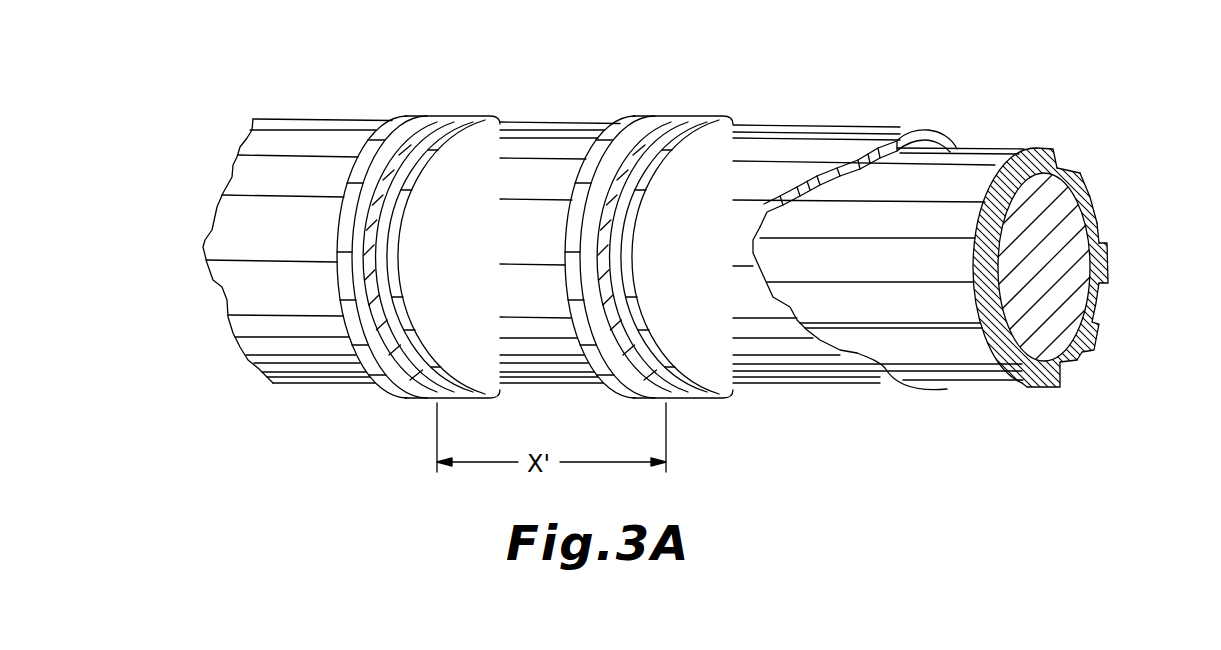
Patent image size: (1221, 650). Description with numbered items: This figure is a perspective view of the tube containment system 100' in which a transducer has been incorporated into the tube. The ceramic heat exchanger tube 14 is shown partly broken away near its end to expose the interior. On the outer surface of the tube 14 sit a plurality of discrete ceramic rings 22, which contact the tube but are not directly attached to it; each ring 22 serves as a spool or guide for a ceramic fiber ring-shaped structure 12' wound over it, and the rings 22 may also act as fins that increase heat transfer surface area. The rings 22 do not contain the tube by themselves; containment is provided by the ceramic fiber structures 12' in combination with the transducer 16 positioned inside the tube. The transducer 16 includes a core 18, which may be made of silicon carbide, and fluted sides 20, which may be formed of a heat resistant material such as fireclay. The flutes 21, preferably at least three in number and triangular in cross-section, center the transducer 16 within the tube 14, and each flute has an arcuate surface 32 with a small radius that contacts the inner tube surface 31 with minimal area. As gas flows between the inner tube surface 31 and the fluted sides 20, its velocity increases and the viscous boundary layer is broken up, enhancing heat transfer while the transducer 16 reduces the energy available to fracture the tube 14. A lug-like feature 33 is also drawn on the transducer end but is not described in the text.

The tube containment system 100' is at (558, 229).
The ceramic fiber ring-shaped structure 12' is at (547, 221).
The ceramic ring 22 is at (407, 114).
The tube 14 is at (836, 122).
The inner tube surface 31 is at (957, 140).
The transducer 16 is at (1078, 172).
The lug 33 is at (1097, 218).
The arcuate surface 32 is at (1108, 252).
The fluted sides 20 is at (1100, 287).
The flutes 21 is at (1096, 345).
The core 18 is at (1043, 327).